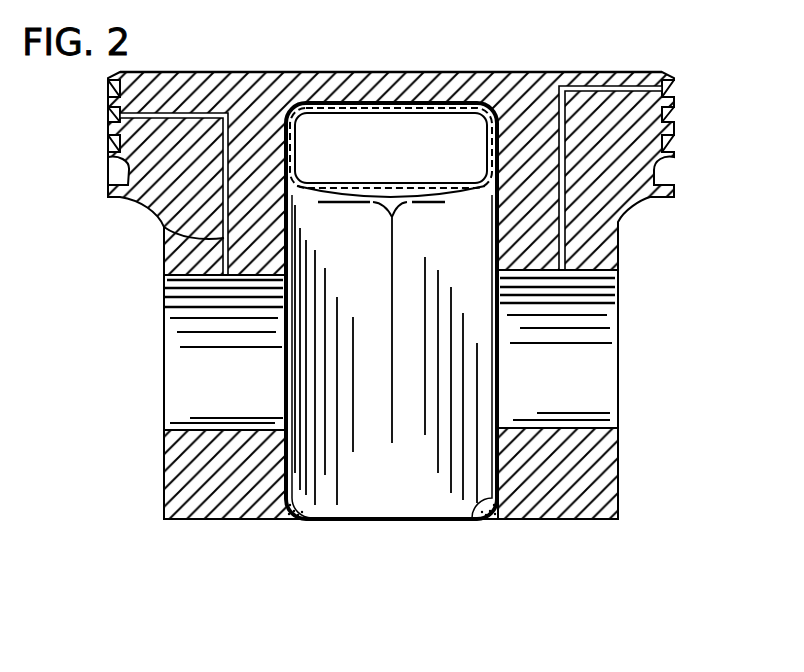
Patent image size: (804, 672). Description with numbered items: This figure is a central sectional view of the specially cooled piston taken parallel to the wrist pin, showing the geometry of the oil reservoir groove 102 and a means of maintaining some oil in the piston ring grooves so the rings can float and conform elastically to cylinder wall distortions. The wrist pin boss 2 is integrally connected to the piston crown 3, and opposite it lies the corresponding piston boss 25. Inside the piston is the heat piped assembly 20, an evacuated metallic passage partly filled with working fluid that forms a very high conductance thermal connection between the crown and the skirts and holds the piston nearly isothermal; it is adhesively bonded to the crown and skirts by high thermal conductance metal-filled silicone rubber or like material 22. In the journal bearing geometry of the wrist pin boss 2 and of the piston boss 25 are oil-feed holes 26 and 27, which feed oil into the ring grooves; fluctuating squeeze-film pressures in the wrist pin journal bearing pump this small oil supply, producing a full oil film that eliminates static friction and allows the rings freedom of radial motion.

The wrist pin boss 2 is at (186, 476).
The piston crown 3 is at (256, 92).
The heat piped assembly 20 is at (407, 487).
The high thermal conductance silicone rubber 22 is at (372, 100).
The piston boss 25 is at (568, 465).
The oil-feed hole 26 is at (160, 220).
The oil-feed hole 27 is at (565, 215).
The oil reservoir groove 102 is at (112, 170).